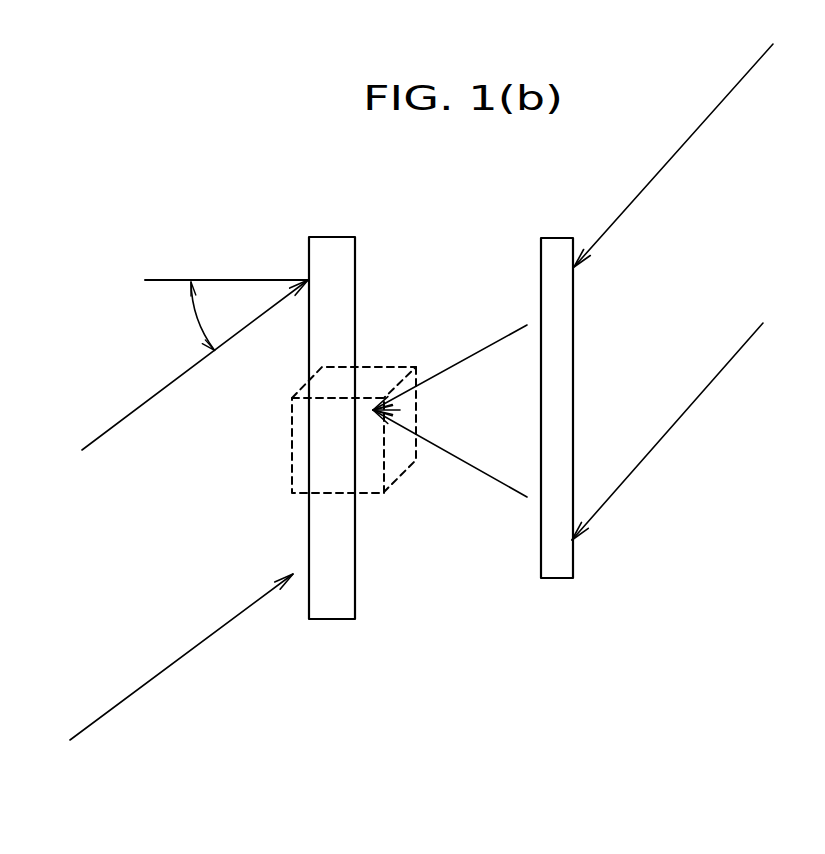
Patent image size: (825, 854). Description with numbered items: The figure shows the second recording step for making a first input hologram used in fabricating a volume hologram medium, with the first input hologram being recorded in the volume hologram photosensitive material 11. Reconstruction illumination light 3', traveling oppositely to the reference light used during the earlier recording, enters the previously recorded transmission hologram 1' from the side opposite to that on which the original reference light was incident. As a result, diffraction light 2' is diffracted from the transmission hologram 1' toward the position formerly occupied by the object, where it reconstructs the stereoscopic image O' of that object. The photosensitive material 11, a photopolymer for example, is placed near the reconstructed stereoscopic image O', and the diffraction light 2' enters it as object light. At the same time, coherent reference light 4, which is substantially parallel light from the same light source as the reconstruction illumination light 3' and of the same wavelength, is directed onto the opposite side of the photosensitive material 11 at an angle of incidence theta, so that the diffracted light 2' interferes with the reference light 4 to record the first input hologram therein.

The optical element (magneto-optical element) 11 is at (334, 245).
The transmission hologram 1' is at (558, 448).
The diffraction light 2' is at (450, 440).
The reconstruction illumination light 3' is at (667, 431).
The reference light 4 is at (207, 638).
The stereoscopic image O' is at (354, 472).